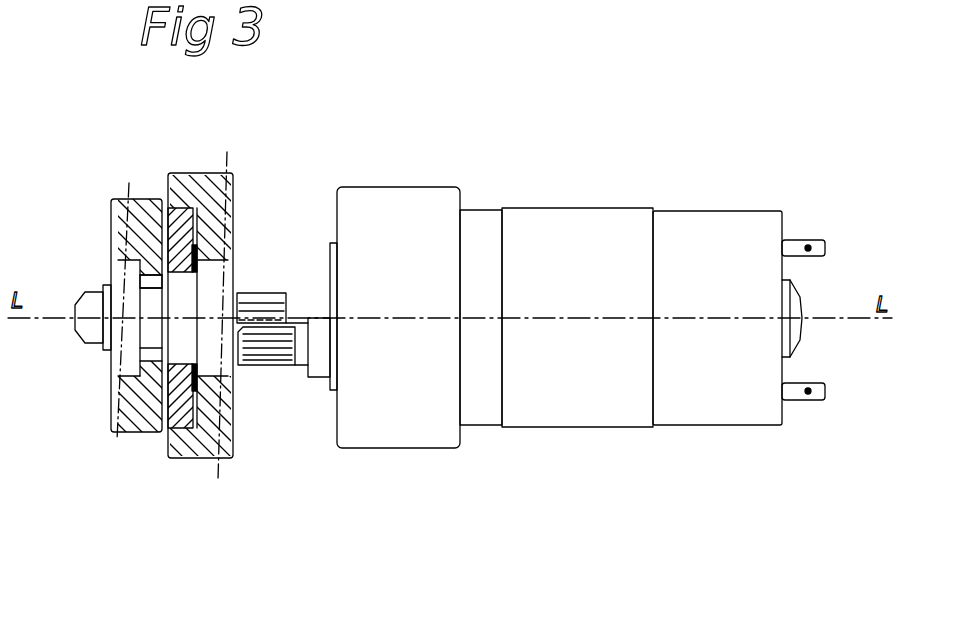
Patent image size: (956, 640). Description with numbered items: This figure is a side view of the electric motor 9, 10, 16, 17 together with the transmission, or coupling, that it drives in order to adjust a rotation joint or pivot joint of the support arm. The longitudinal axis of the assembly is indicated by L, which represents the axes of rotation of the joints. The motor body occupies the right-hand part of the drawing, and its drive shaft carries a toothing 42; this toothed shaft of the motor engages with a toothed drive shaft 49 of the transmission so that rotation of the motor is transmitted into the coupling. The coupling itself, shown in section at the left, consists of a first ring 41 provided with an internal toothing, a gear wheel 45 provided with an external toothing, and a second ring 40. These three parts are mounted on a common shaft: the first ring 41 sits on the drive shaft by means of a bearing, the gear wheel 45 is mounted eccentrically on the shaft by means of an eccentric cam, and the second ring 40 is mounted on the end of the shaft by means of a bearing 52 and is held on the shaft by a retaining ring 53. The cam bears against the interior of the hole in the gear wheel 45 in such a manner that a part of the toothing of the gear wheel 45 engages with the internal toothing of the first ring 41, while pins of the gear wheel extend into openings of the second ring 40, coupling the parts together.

The electric motor 9 is at (577, 303).
The electric motor 10 is at (577, 303).
The electric motor 16 is at (577, 303).
The electric motor 17 is at (593, 232).
The second ring 40 is at (133, 417).
The first ring 41 is at (200, 443).
The toothing of the drive shaft 42 is at (267, 353).
The gear wheel 45 is at (182, 403).
The toothed drive shaft 49 is at (252, 299).
The bearing 52 is at (132, 272).
The retaining ring 53 is at (105, 346).